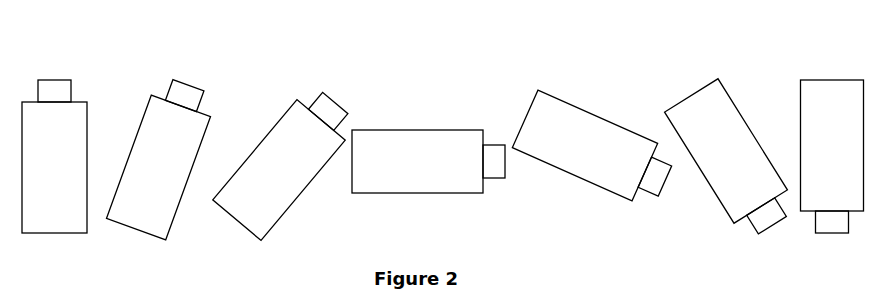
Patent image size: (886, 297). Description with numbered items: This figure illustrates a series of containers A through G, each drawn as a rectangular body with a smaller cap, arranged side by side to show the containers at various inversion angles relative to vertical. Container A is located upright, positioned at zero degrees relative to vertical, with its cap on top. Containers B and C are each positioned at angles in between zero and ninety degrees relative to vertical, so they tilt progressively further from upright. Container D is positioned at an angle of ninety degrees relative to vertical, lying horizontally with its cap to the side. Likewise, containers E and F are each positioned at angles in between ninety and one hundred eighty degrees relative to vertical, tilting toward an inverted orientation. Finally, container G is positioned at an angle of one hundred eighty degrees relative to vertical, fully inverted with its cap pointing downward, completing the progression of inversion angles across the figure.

The container A is at (54, 132).
The container B is at (162, 135).
The container C is at (286, 135).
The container D is at (428, 112).
The container E is at (594, 120).
The container F is at (732, 136).
The container G is at (832, 132).